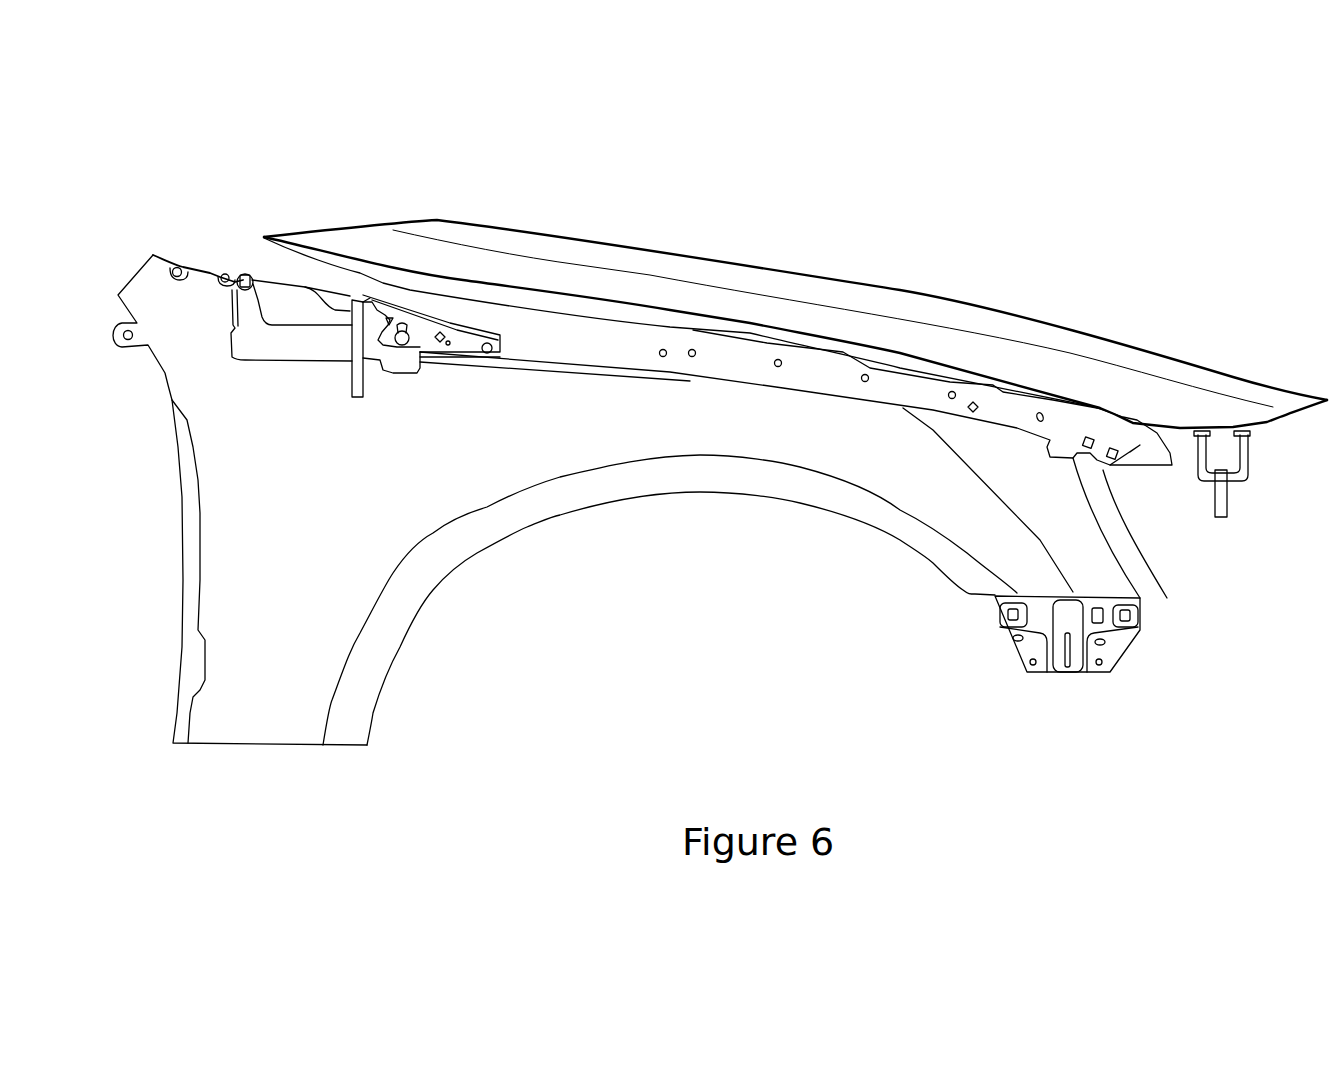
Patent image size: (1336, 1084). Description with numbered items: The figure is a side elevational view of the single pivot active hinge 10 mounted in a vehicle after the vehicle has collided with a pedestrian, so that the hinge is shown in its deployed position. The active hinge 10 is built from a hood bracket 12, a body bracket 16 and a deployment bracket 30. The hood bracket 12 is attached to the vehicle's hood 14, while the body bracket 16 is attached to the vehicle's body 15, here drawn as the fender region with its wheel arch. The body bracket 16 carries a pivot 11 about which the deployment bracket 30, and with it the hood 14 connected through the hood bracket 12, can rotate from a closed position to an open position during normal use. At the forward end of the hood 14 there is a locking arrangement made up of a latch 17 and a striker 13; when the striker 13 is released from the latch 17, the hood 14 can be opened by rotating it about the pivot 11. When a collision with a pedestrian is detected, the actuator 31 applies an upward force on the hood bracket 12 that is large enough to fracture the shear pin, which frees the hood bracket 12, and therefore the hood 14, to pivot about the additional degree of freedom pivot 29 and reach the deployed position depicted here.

The single pivot active hinge 10 is at (408, 377).
The pivot 11 is at (243, 275).
The hood bracket 12 is at (437, 327).
The striker 13 is at (1237, 483).
The hood 14 is at (778, 283).
The body 15 is at (222, 604).
The body bracket 16 is at (243, 353).
The latch 17 is at (1218, 513).
The additional degree of freedom pivot 29 is at (489, 359).
The deployment bracket 30 is at (295, 327).
The actuator 31 is at (353, 390).